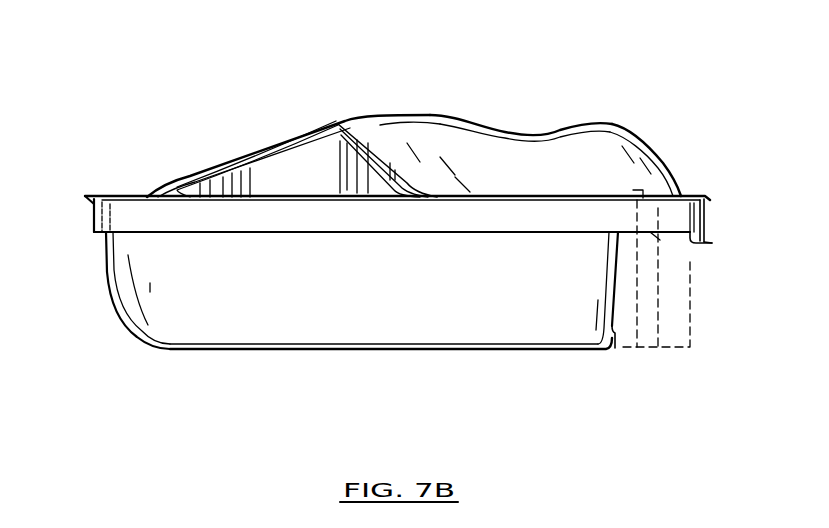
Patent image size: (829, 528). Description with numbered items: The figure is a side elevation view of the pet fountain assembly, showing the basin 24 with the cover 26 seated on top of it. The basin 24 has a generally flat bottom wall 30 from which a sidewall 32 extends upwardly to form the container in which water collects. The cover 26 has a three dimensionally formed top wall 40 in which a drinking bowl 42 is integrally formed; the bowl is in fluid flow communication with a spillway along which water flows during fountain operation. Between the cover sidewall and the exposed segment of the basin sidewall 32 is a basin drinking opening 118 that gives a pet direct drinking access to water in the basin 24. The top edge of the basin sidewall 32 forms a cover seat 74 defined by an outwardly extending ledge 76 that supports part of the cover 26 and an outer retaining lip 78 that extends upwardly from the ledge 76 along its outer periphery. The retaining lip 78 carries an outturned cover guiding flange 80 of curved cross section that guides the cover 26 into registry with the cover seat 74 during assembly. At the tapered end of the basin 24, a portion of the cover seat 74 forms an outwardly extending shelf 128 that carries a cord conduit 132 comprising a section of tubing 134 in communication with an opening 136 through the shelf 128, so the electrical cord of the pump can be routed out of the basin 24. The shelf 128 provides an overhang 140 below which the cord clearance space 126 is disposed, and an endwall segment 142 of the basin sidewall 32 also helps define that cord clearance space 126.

The basin 24 is at (203, 373).
The cover 26 is at (383, 92).
The bottom wall 30 is at (440, 350).
The sidewall 32 is at (320, 323).
The top wall 40 is at (562, 176).
The drinking bowl 42 is at (544, 96).
The cover seat 74 is at (103, 189).
The ledge 76 is at (102, 237).
The outer retaining lip 78 is at (92, 214).
The cover guiding flange 80 is at (87, 199).
The basin drinking opening 118 is at (293, 183).
The cord clearance space 126 is at (674, 298).
The shelf 128 is at (712, 243).
The cord conduit 132 is at (668, 188).
The section of tubing 134 is at (641, 186).
The opening 136 is at (657, 237).
The overhang 140 is at (650, 285).
The endwall segment 142 is at (615, 348).